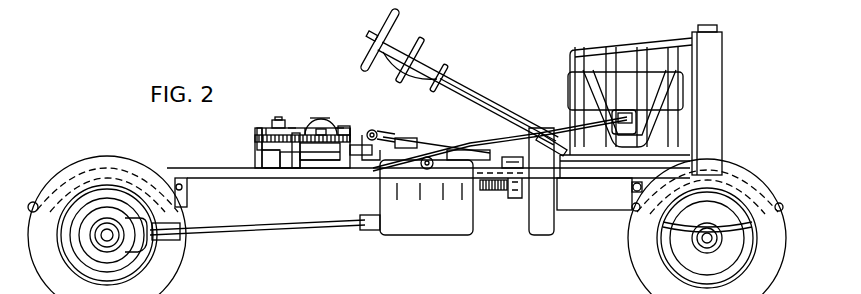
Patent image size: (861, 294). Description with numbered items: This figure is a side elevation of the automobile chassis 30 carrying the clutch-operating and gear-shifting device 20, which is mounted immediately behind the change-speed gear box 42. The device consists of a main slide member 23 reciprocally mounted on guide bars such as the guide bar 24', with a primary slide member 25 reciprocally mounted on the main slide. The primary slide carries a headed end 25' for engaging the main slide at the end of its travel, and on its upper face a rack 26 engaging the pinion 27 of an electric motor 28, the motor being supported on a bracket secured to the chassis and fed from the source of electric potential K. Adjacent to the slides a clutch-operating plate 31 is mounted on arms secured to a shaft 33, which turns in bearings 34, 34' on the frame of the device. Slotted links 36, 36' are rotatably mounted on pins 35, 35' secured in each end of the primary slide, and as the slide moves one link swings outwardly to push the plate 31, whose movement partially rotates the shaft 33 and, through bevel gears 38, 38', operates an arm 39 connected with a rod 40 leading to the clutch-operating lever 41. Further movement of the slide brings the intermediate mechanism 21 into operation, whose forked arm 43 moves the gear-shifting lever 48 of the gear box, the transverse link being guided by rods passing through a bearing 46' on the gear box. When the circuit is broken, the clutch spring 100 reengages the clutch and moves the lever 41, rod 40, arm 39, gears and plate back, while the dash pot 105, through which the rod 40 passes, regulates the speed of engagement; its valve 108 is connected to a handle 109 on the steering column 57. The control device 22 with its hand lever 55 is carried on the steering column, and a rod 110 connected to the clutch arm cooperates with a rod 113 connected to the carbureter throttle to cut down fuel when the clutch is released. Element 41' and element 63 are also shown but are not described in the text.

The clutch-operating and gear-shifting device 20 is at (308, 228).
The intermediate mechanism 21 is at (443, 202).
The control device 22 is at (428, 58).
The main slide member 23 is at (292, 128).
The guide bar 24' is at (247, 150).
The primary slide member 25 is at (299, 165).
The headed end 25' is at (345, 125).
The rack 26 is at (280, 112).
The pinion 27 is at (318, 118).
The electric motor 28 is at (320, 124).
The chassis 30 is at (165, 163).
The clutch-operating plate 31 is at (305, 128).
The shaft 33 is at (318, 170).
The bearing 34 is at (294, 177).
The bearing 34' is at (335, 171).
The pin 35 is at (358, 108).
The pin 35' is at (286, 94).
The slotted link 36 is at (331, 102).
The slotted link 36' is at (255, 148).
The bevel gear 38 is at (356, 126).
The bevel gear 38' is at (383, 121).
The arm 39 is at (372, 130).
The rod 40 is at (388, 135).
The clutch-operating lever 41 is at (511, 169).
The bracket 41' is at (418, 202).
The gear box 42 is at (452, 236).
The forked arm 43 is at (412, 141).
The bearing 46' is at (428, 178).
The gear-shifting lever 48 is at (419, 133).
The hand lever 55 is at (404, 70).
The steering column 57 is at (532, 128).
The collar 63 is at (444, 63).
The spring 100 is at (492, 192).
The dash pot 105 is at (462, 150).
The valve 108 is at (492, 141).
The handle 109 is at (402, 64).
The rod 110 is at (330, 160).
The rod 113 is at (550, 134).
The source of electric potential K is at (262, 128).